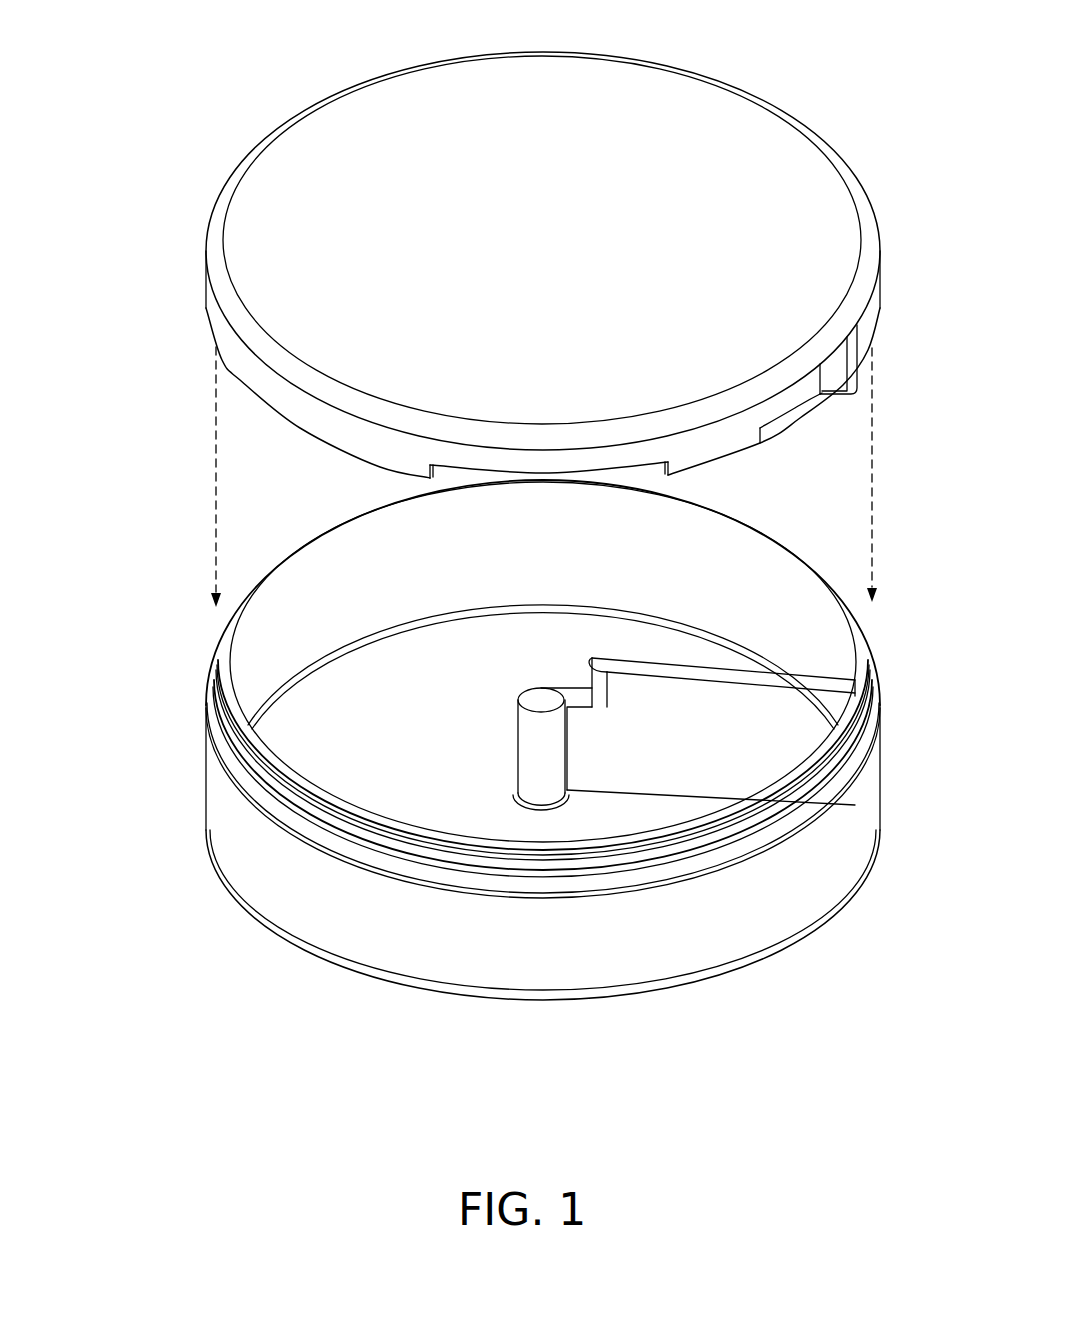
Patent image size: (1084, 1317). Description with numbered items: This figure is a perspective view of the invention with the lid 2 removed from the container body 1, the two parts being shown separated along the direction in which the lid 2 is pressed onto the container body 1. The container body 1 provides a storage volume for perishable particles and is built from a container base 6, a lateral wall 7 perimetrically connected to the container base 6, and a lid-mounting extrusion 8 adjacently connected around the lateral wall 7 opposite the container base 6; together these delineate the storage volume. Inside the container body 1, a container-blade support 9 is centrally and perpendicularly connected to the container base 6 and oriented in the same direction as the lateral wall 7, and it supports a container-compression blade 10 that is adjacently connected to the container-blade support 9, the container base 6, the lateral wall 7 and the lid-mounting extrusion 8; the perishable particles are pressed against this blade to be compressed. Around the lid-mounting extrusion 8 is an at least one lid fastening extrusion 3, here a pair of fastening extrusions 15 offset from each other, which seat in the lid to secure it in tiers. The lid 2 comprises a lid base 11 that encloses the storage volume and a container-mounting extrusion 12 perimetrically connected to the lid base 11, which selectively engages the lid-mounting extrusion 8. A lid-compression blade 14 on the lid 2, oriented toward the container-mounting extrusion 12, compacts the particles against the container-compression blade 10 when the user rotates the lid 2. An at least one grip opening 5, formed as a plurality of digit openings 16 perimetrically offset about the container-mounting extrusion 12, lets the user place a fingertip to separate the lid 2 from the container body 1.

The container body 1 is at (120, 803).
The lid 2 is at (99, 252).
The at least one lid fastening extrusion 3 is at (305, 867).
The at least one grip opening 5 is at (898, 485).
The container base 6 is at (663, 985).
The lateral wall 7 is at (866, 815).
The lid-mounting extrusion 8 is at (500, 884).
The container-blade support 9 is at (530, 745).
The container-compression blade 10 is at (770, 668).
The lid base 11 is at (470, 83).
The container-mounting extrusion 12 is at (212, 312).
The lid-compression blade 14 is at (855, 377).
The pair of fastening extrusions 15 is at (340, 828).
The plurality of digit openings 16 is at (624, 476).